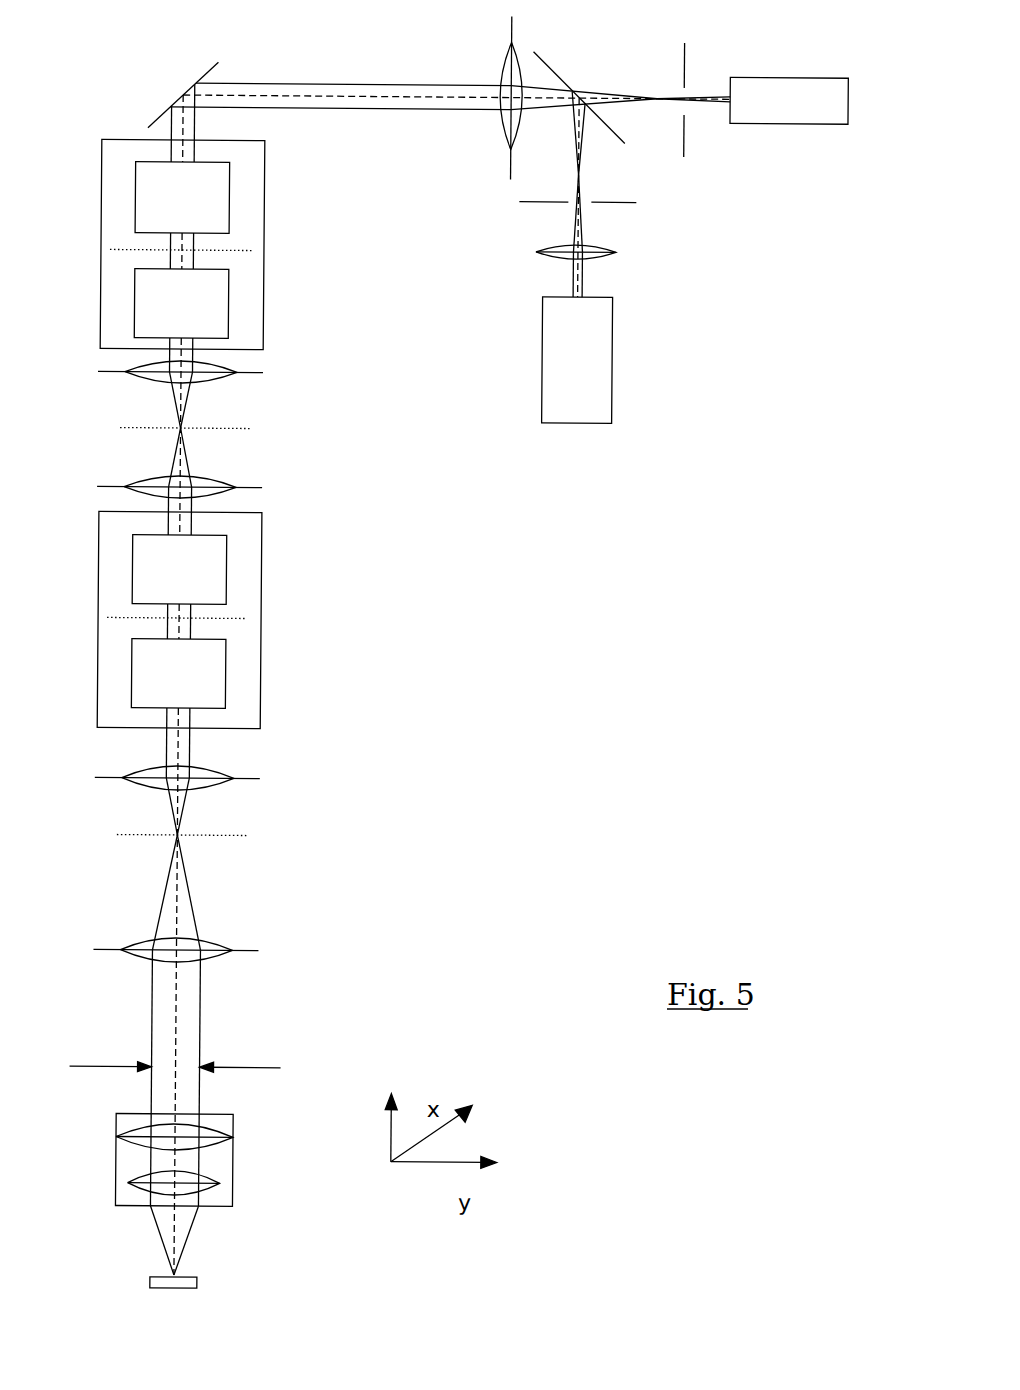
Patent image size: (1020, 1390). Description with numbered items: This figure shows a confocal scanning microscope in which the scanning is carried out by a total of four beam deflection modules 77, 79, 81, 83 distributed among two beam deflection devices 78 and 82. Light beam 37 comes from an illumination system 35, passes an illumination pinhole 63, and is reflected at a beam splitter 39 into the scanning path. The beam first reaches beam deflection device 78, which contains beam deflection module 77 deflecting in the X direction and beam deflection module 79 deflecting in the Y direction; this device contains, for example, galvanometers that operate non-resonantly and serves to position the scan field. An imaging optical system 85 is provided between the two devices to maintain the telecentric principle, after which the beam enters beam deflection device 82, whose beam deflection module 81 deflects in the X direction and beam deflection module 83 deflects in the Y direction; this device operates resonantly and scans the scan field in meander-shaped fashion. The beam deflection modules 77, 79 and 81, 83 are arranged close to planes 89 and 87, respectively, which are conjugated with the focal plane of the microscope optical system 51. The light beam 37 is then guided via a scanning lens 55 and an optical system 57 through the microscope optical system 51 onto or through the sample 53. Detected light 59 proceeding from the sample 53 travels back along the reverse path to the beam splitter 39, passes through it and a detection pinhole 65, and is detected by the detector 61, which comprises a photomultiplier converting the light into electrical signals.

The illumination system 35 is at (600, 377).
The light beam 37 is at (573, 283).
The beam splitter 39 is at (547, 63).
The microscope optical system 51 is at (233, 1157).
The sample 53 is at (180, 1283).
The scanning lens 55 is at (207, 783).
The optical system 57 is at (225, 950).
The detected light 59 is at (221, 1112).
The detector 61 is at (789, 88).
The illumination pinhole 63 is at (613, 203).
The detection pinhole 65 is at (686, 130).
The beam deflection module 77 is at (205, 212).
The beam deflection device 78 is at (252, 168).
The beam deflection module 79 is at (193, 303).
The beam deflection module 81 is at (202, 580).
The beam deflection device 82 is at (110, 526).
The beam deflection module 83 is at (188, 670).
The imaging optical system 85 is at (268, 399).
The plane 87 is at (122, 617).
The plane 89 is at (132, 250).